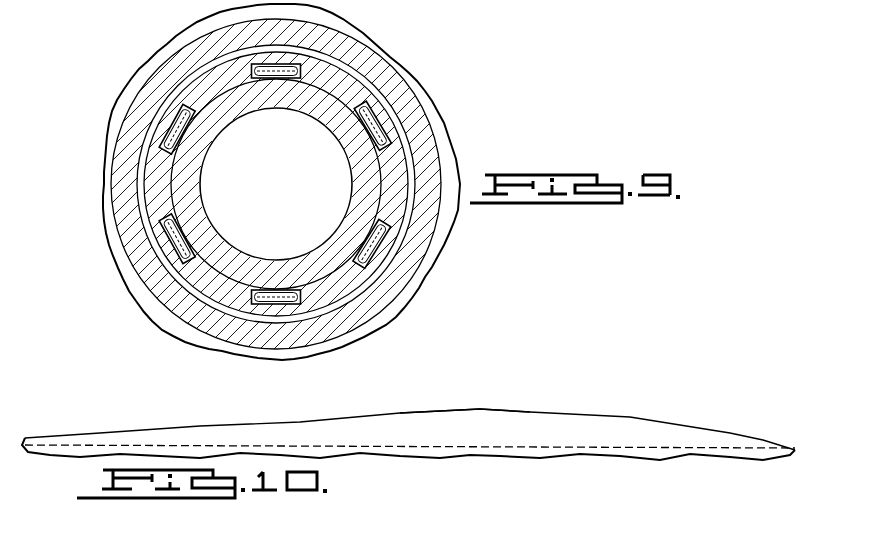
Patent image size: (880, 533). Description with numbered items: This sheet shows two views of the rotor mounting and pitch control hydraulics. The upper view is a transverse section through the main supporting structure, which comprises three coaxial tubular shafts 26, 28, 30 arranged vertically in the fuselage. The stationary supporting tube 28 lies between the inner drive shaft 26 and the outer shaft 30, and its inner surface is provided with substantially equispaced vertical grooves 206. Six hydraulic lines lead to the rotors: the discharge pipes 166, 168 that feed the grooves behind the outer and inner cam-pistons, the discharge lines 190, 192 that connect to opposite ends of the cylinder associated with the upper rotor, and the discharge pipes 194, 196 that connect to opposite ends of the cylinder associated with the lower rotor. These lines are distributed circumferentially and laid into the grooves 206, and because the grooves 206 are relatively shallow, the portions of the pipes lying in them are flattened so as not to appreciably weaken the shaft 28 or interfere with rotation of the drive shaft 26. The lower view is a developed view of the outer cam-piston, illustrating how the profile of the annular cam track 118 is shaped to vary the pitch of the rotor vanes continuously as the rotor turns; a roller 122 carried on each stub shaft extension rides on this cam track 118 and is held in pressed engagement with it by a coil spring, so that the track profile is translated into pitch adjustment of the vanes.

In FIG. 9, the tubular shaft 26 is at (357, 189).
In FIG. 9, the tubular shaft 28 is at (333, 100).
In FIG. 9, the tubular shaft 30 is at (428, 150).
In FIG. 9, the discharge pipe 166 is at (262, 79).
In FIG. 9, the discharge pipe 168 is at (170, 124).
In FIG. 9, the discharge line 190 is at (173, 238).
In FIG. 9, the discharge line 192 is at (278, 298).
In FIG. 9, the discharge pipe 194 is at (378, 118).
In FIG. 9, the discharge pipe 196 is at (367, 260).
In FIG. 9, the vertical groove 206 is at (373, 248).
In FIG. 10, the cam track 118 is at (518, 410).
In FIG. 10, the roller 122 is at (452, 412).